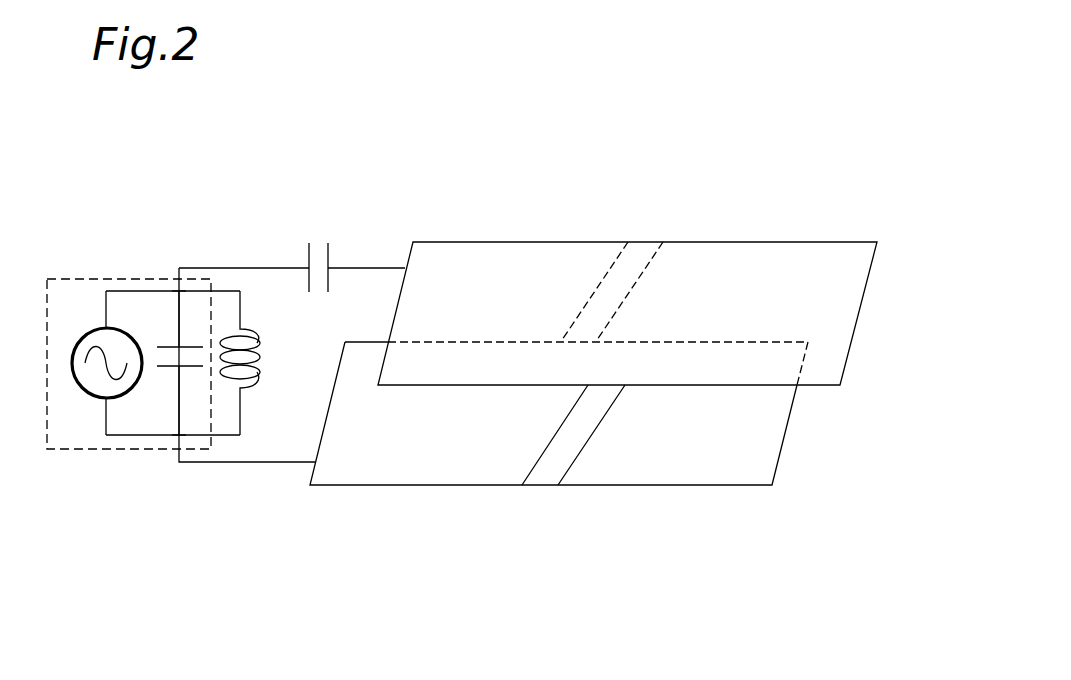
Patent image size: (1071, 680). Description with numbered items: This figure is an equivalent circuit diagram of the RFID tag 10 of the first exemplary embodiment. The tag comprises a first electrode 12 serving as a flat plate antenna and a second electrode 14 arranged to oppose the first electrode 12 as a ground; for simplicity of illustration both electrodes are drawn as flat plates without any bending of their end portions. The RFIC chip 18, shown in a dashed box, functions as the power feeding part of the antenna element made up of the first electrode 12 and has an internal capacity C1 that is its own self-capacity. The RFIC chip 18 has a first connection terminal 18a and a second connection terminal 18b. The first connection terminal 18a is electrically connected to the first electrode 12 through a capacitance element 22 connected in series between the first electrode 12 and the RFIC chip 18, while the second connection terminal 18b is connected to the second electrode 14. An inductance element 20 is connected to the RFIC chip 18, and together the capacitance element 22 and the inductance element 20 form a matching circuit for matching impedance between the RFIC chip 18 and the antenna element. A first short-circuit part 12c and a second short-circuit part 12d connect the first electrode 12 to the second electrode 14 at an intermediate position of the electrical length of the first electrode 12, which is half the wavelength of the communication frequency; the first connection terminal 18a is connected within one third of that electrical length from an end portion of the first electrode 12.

The RFID tag 10 is at (593, 333).
The first electrode 12 is at (676, 242).
The first short-circuit part 12c is at (608, 268).
The second short-circuit part 12d is at (548, 476).
The second electrode 14 is at (661, 487).
The RFIC chip 18 is at (143, 359).
The first connection terminal 18a is at (179, 291).
The second connection terminal 18b is at (179, 435).
The inductance element 20 is at (274, 330).
The capacitance element 22 is at (329, 234).
The internal capacity C1 is at (171, 363).